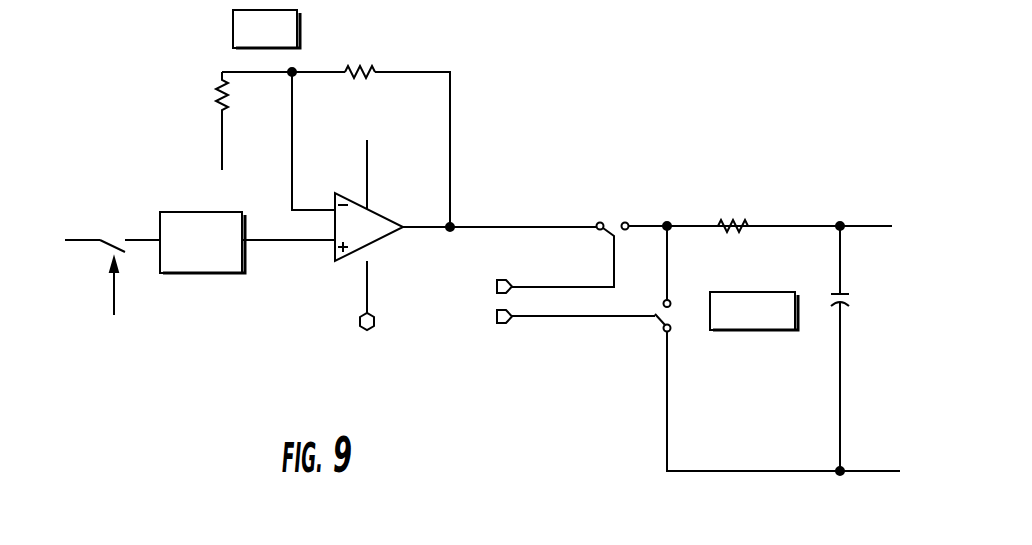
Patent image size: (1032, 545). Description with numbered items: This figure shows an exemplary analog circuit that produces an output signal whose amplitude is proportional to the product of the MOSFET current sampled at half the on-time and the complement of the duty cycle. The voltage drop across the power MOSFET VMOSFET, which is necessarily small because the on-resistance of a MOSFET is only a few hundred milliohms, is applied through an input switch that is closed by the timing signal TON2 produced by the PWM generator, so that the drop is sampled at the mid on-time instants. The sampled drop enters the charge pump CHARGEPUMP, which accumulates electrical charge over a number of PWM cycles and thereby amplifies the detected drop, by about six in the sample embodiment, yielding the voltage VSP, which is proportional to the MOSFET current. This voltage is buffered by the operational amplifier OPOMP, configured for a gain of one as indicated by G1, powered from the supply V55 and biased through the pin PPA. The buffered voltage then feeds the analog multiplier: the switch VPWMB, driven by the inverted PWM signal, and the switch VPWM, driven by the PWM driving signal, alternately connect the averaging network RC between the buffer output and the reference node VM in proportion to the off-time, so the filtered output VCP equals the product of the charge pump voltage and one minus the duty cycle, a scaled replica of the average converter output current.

The MOSFET voltage drop input VMOSFET is at (96, 224).
The TON/2 sampling instant TON2 is at (137, 288).
The charge pump CHARGEPUMP is at (202, 242).
The sampled charge pump output voltage VSP is at (288, 218).
The operational amplifier OPOMP is at (338, 163).
The unity gain G1 is at (266, 29).
The supply voltage V55 is at (280, 140).
The bias pin PPA is at (377, 295).
The inverted PWM driving signal switch VPWMB is at (488, 250).
The PWM driving signal switch VPWM is at (668, 346).
The RC averaging network RC is at (754, 275).
The product output voltage Vcp*(1-D) VCP is at (837, 326).
The reference node voltage VM is at (740, 444).